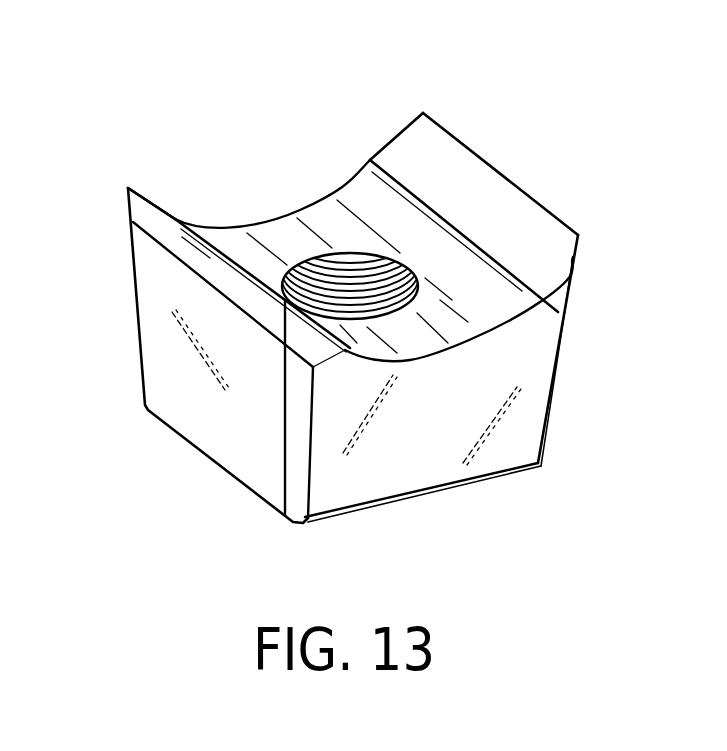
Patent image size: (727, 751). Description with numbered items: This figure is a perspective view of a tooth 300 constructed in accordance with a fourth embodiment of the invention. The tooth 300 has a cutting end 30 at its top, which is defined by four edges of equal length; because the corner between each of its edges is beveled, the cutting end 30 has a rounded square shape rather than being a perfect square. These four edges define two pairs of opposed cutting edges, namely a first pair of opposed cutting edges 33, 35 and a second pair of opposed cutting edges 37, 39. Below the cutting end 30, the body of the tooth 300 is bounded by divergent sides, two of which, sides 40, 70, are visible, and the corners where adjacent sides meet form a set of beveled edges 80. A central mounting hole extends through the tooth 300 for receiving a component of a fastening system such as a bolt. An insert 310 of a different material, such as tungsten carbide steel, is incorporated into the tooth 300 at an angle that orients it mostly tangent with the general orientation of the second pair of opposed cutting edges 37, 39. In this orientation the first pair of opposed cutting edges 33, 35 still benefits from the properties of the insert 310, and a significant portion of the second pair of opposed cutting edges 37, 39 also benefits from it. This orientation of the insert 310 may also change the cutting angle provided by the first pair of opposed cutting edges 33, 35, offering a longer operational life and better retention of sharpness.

The tooth 300 is at (158, 78).
The cutting end 30 is at (360, 207).
The first pair of opposed cutting edges 33 is at (443, 123).
The first pair of opposed cutting edges 35 is at (153, 197).
The second pair of opposed cutting edges 37 is at (437, 353).
The second pair of opposed cutting edges 39 is at (272, 218).
The divergent side 40 is at (403, 447).
The divergent side 70 is at (195, 402).
The beveled edges 80 is at (300, 470).
The insert 310 is at (183, 245).